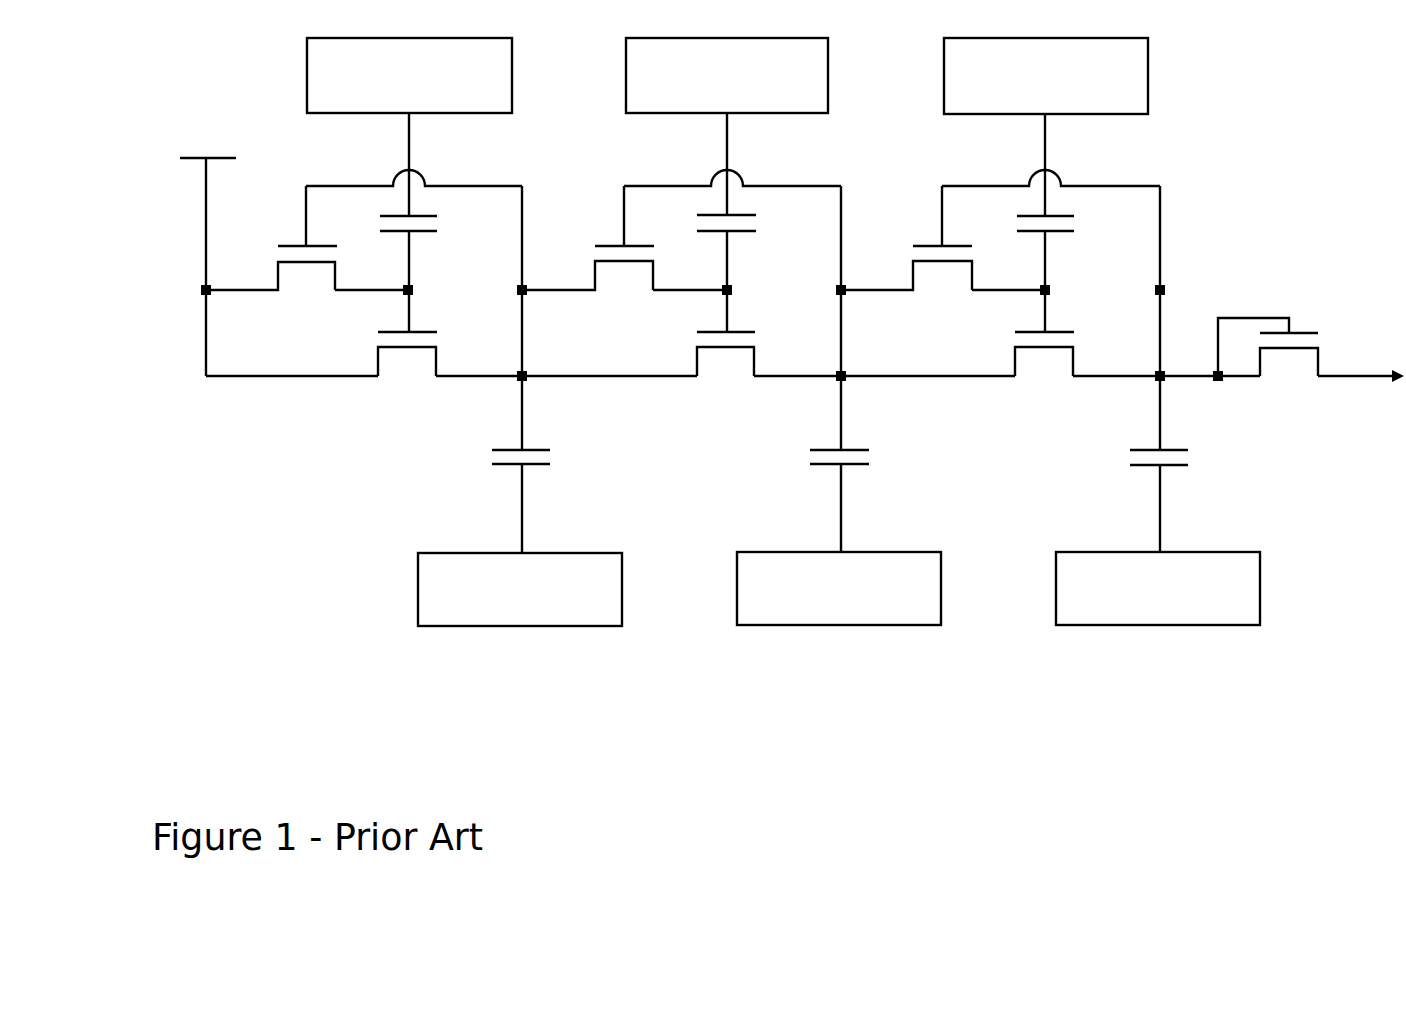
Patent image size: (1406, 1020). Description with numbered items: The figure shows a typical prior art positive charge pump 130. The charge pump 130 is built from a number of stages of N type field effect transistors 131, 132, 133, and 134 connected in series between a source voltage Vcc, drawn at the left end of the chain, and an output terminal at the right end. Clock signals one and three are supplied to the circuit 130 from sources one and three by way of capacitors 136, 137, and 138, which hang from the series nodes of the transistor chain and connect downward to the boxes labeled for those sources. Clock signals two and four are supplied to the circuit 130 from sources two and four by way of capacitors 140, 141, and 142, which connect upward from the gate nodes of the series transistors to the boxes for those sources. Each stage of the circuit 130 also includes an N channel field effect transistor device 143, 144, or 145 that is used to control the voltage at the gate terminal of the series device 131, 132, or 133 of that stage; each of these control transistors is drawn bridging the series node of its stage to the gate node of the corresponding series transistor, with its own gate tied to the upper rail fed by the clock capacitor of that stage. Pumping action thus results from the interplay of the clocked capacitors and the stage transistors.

The positive charge pump 130 is at (104, 487).
The N type field effect transistor 131 is at (412, 344).
The N type field effect transistor 132 is at (730, 344).
The N type field effect transistor 133 is at (1047, 344).
The N type field effect transistor 134 is at (1276, 341).
The capacitor 136 is at (512, 443).
The capacitor 137 is at (835, 445).
The capacitor 138 is at (1151, 445).
The capacitor 140 is at (414, 235).
The capacitor 141 is at (731, 234).
The capacitor 142 is at (1049, 235).
The N channel field effect transistor device 143 is at (271, 256).
The N channel field effect transistor device 144 is at (588, 256).
The N channel field effect transistor device 145 is at (906, 256).